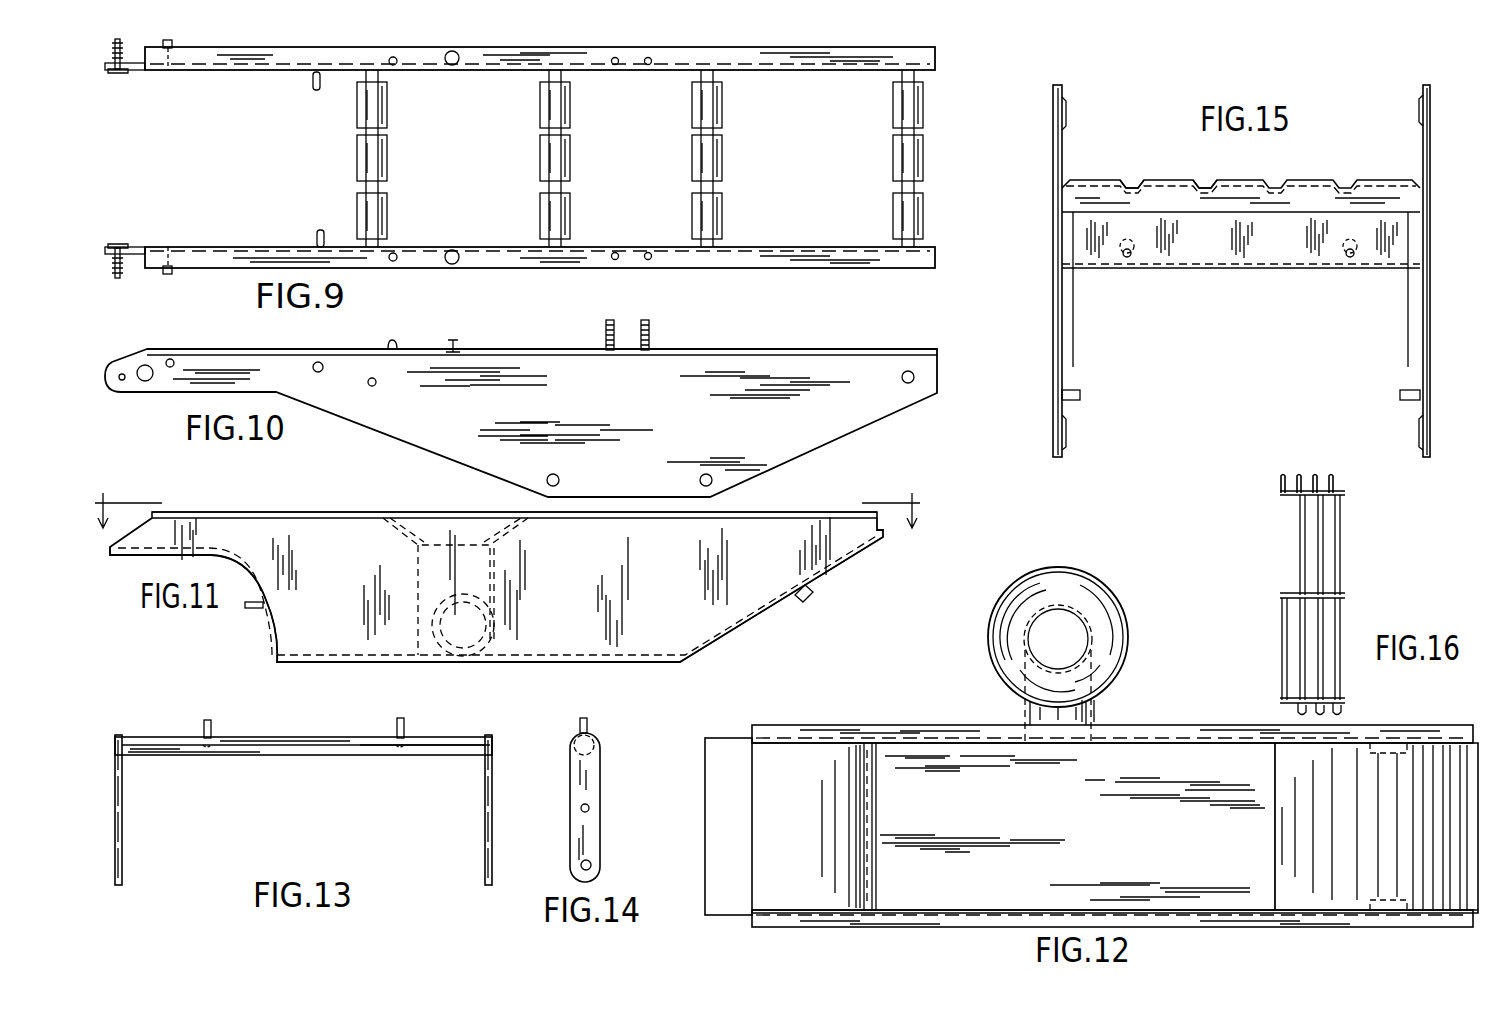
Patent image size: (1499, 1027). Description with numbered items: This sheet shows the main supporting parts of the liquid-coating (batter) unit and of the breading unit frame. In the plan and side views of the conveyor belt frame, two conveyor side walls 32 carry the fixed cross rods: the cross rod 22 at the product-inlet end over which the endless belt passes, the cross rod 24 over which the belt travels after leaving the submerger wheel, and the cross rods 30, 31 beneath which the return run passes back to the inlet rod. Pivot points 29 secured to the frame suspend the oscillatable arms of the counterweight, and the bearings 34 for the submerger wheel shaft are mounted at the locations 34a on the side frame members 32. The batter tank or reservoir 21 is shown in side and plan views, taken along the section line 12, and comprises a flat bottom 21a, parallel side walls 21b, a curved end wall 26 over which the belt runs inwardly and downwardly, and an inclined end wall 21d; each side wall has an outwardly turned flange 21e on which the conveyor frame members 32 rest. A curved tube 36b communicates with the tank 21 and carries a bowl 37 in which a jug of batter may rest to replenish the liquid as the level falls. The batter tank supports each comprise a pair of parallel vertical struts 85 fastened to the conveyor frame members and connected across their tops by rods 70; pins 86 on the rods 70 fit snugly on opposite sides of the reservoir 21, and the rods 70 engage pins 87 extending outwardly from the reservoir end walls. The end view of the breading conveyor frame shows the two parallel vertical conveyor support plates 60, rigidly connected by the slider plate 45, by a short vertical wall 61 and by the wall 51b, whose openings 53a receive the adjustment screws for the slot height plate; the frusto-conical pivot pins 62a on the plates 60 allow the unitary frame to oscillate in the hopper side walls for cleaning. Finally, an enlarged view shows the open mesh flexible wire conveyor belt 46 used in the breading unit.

In FIG. 11, the section line 12 is at (503, 528).
In FIG. 11, the batter tank or reservoir 21 is at (566, 607).
In FIG. 12, the batter tank or reservoir 21 is at (1200, 718).
In FIG. 11, the flat bottom 21a is at (600, 662).
In FIG. 12, the flat bottom 21a is at (1068, 817).
In FIG. 11, the side walls 21b is at (348, 636).
In FIG. 11, the inclined end wall 21d is at (726, 632).
In FIG. 12, the inclined end wall 21d is at (1320, 840).
In FIG. 11, the outwardly turned flange 21e is at (318, 518).
In FIG. 12, the outwardly turned flange 21e is at (950, 725).
In FIG. 9, the cross rod 22 is at (910, 157).
In FIG. 9, the cross rod 24 is at (374, 155).
In FIG. 11, the curving plate 26 is at (268, 575).
In FIG. 12, the curving plate 26 is at (770, 845).
In FIG. 9, the pivot points 29 is at (318, 90).
In FIG. 9, the cross rod 30 is at (556, 157).
In FIG. 9, the cross rod 31 is at (708, 157).
In FIG. 9, the conveyor side walls 32 is at (238, 62).
In FIG. 10, the conveyor side walls 32 is at (754, 350).
In FIG. 10, the bearings 34 is at (648, 320).
In FIG. 9, the bearing mounting locations 34a is at (648, 65).
In FIG. 11, the curved tube 36b is at (494, 636).
In FIG. 12, the curved tube 36b is at (1096, 710).
In FIG. 11, the bowl 37 is at (520, 548).
In FIG. 12, the bowl 37 is at (1110, 620).
In FIG. 15, the slider plate 45 is at (1100, 182).
In FIG. 16, the open mesh wire conveyor belt 46 is at (1340, 554).
In FIG. 15, the wall 51b is at (1228, 262).
In FIG. 15, the openings 53a is at (1125, 260).
In FIG. 15, the conveyor support plates 60 is at (1053, 192).
In FIG. 15, the short vertical wall 61 is at (1314, 190).
In FIG. 15, the pivot pins 62a is at (1062, 438).
In FIG. 13, the rods 70 is at (372, 748).
In FIG. 14, the rods 70 is at (596, 758).
In FIG. 13, the struts 85 is at (122, 834).
In FIG. 14, the struts 85 is at (594, 832).
In FIG. 13, the pins 86 is at (211, 730).
In FIG. 14, the pins 86 is at (588, 724).
In FIG. 11, the pins 87 is at (260, 612).